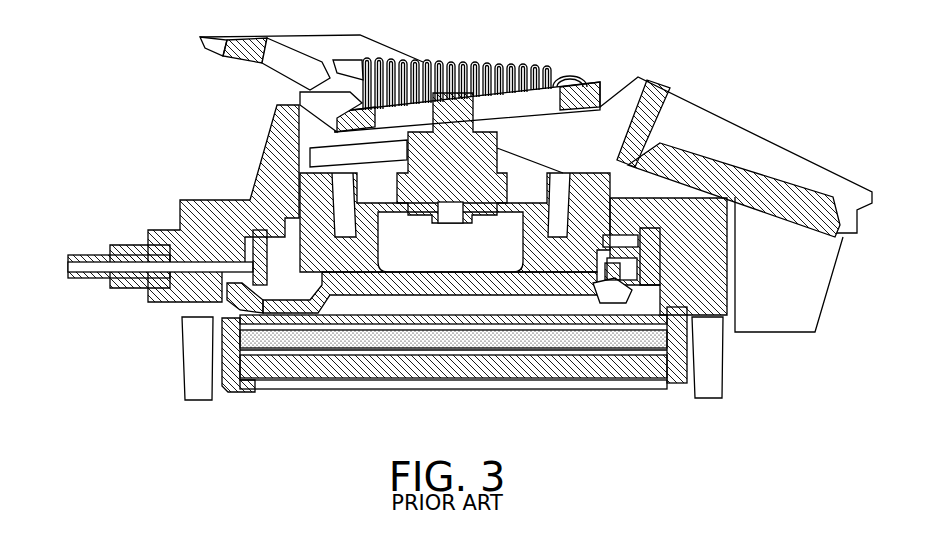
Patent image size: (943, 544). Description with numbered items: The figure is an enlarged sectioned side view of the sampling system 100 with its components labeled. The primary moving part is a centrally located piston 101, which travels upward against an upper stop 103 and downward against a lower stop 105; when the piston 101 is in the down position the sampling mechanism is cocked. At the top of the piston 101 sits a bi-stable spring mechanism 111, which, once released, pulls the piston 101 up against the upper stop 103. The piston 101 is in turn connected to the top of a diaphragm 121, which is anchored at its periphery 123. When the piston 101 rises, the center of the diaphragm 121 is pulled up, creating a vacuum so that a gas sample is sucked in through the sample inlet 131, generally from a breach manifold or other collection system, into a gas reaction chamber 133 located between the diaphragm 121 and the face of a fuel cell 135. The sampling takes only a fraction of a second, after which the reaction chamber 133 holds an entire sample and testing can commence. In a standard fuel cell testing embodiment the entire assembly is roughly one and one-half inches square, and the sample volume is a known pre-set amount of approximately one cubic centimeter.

The sampling system 100 is at (780, 106).
The piston 101 is at (382, 293).
The upper stop 103 is at (613, 213).
The lower stop 105 is at (627, 190).
The bi-stable spring mechanism 111 is at (525, 65).
The diaphragm 121 is at (608, 250).
The periphery 123 is at (222, 270).
The sample inlet 131 is at (72, 266).
The gas reaction chamber 133 is at (533, 297).
The fuel cell 135 is at (452, 340).